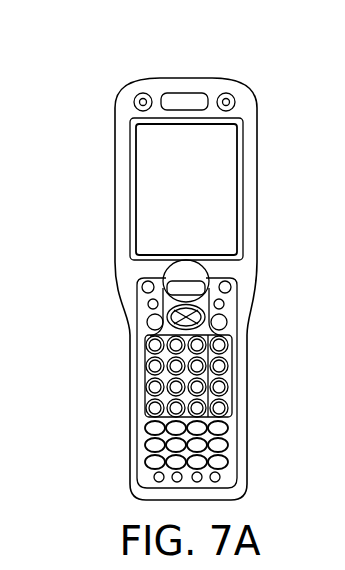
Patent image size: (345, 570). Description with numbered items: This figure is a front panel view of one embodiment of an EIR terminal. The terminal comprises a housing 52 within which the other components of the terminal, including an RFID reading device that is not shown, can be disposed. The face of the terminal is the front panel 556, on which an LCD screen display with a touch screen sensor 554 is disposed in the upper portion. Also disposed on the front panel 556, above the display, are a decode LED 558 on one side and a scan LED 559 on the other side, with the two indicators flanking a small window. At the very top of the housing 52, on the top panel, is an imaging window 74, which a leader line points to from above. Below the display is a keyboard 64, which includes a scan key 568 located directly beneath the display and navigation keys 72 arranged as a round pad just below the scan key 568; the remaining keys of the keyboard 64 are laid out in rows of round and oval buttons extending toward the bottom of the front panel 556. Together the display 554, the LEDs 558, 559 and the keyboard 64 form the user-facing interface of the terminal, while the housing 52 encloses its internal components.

The housing 52 is at (258, 203).
The imaging window 74 is at (179, 78).
The decode LED 558 is at (134, 101).
The scan LED 559 is at (235, 101).
The front panel 556 is at (122, 143).
The LCD screen display with a touch screen sensor 554 is at (186, 192).
The scan key 568 is at (180, 279).
The navigation keys 72 is at (162, 312).
The keyboard 64 is at (162, 377).